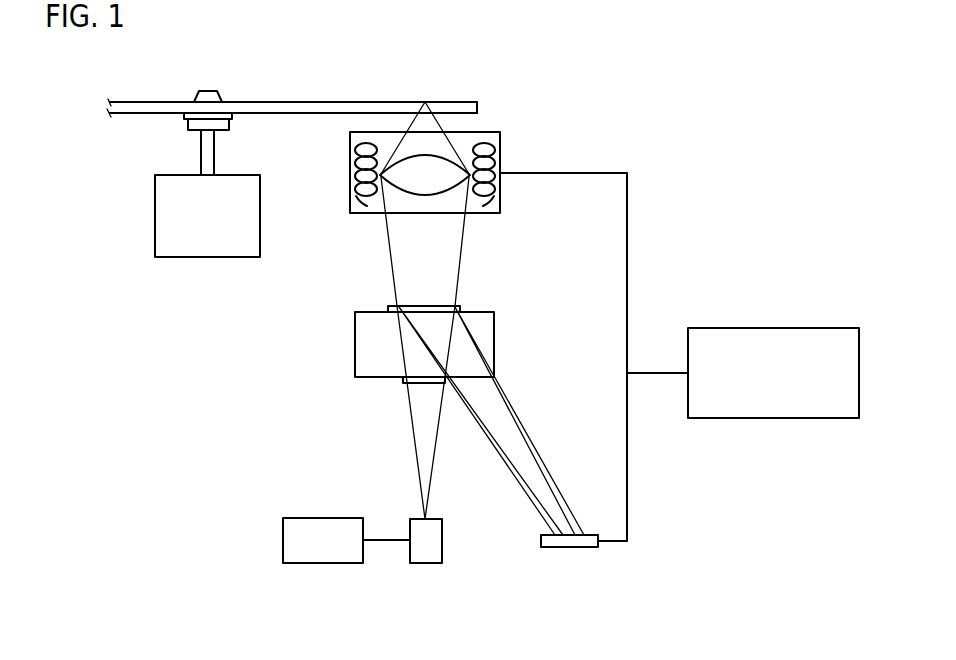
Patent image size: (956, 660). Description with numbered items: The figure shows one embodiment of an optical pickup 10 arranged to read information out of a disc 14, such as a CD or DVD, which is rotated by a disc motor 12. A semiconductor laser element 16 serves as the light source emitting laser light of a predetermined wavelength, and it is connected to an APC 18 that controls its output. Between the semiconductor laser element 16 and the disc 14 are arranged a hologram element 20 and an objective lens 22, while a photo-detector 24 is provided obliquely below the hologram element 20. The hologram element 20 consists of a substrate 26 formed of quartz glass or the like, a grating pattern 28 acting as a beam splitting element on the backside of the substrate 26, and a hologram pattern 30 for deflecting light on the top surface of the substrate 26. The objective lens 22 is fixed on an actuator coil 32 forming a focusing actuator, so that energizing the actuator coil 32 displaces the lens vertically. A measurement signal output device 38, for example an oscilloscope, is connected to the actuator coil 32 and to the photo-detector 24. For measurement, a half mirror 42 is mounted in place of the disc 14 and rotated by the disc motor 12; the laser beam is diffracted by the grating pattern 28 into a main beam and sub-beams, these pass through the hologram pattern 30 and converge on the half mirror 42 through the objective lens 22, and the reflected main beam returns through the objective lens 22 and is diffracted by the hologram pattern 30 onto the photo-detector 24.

The optical pickup 10 is at (586, 117).
The disc motor 12 is at (195, 258).
The disc 14 is at (325, 101).
The half mirror 42 is at (293, 107).
The semiconductor laser element 16 is at (427, 565).
The APC 18 is at (318, 565).
The hologram element 20 is at (347, 320).
The objective lens 22 is at (423, 165).
The photo-detector 24 is at (565, 550).
The substrate 26 is at (366, 345).
The grating pattern 28 is at (418, 384).
The hologram pattern 30 is at (428, 306).
The actuator coil 32 is at (500, 155).
The measurement signal output device 38 is at (783, 327).